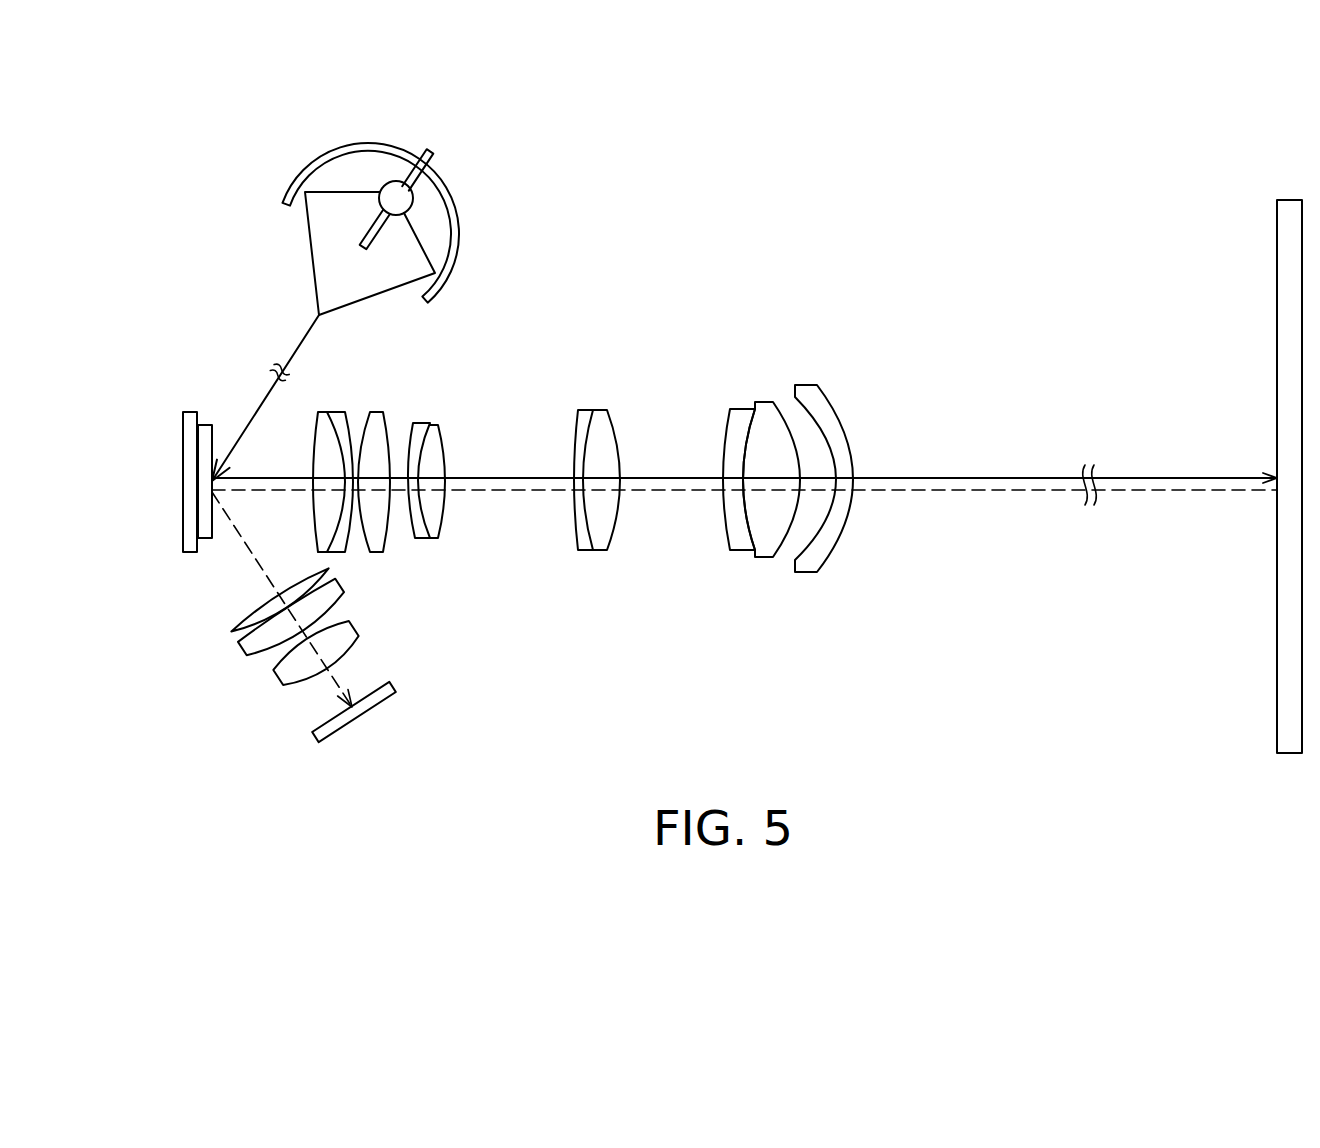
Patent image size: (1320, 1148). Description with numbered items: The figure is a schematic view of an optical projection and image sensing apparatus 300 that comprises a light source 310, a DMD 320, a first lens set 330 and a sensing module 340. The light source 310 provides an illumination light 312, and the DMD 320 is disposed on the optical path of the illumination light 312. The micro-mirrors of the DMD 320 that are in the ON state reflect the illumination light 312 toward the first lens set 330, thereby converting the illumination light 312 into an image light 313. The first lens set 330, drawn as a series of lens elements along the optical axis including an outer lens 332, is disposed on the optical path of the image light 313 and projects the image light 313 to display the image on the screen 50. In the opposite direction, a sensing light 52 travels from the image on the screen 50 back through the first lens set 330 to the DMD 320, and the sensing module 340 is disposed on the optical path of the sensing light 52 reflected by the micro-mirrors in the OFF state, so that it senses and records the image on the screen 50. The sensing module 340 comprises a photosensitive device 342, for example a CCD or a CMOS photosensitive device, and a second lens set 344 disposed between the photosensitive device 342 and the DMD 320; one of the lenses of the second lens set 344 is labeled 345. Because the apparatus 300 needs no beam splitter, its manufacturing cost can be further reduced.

The optical projection and image sensing apparatus 300 is at (1178, 775).
The light source 310 is at (310, 178).
The illumination light 312 is at (240, 430).
The image light 313 is at (293, 487).
The DMD 320 is at (188, 478).
The first lens set 330 is at (840, 389).
The lens 332 is at (803, 397).
The sensing module 340 is at (173, 677).
The photosensitive device 342 is at (318, 736).
The second lens set 344 is at (305, 641).
The lens 345 is at (338, 597).
The screen 50 is at (1292, 754).
The sensing light 52 is at (1167, 492).